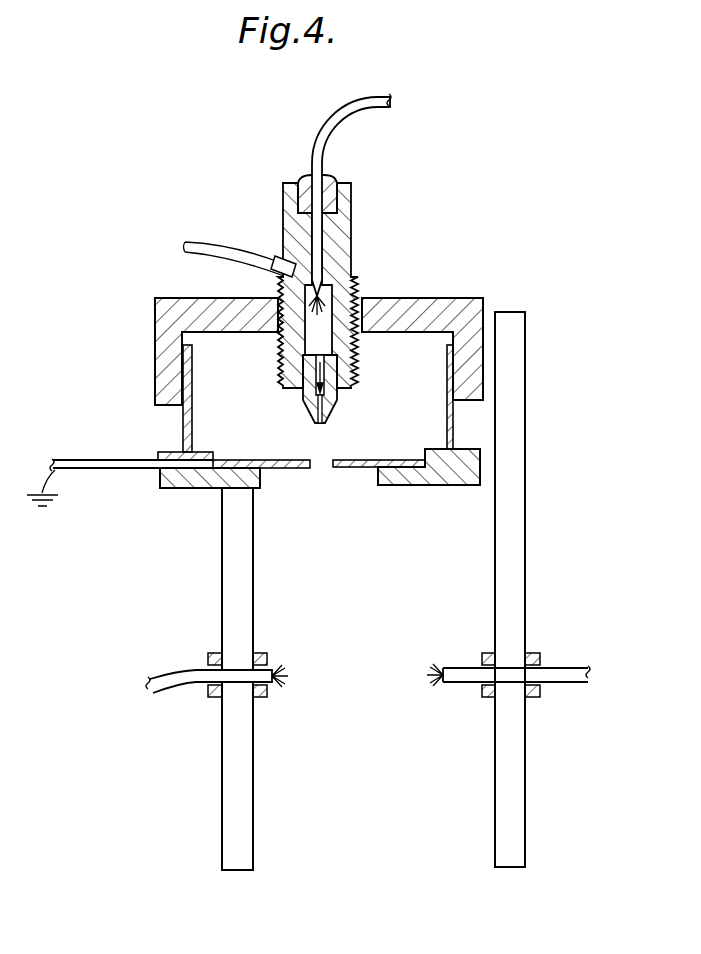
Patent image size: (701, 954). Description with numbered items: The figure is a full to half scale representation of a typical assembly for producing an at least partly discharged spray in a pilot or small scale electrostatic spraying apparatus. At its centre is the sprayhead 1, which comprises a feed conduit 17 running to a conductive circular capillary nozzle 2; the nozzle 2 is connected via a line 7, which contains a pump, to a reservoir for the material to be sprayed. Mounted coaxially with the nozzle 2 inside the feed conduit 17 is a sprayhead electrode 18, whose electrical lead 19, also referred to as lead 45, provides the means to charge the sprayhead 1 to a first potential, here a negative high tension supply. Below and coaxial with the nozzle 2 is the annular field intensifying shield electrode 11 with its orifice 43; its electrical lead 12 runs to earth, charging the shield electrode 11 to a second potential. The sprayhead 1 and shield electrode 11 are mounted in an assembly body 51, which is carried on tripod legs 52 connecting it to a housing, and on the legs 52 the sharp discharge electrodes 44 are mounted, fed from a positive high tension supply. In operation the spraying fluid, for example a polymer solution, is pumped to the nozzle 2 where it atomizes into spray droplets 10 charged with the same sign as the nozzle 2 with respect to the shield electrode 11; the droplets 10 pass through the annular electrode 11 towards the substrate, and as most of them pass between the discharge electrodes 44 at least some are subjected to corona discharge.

The sprayhead 1 is at (352, 240).
The conductive circular capillary nozzle 2 is at (318, 423).
The line 7 is at (200, 243).
The spray droplets 10 is at (320, 602).
The annular field intensifying shield electrode 11 is at (345, 468).
The electrical lead 12 is at (108, 460).
The feed conduit 17 is at (317, 328).
The sprayhead electrode 18 is at (321, 291).
The electrical lead 19 is at (330, 138).
The orifice 43 is at (320, 469).
The discharge electrodes 44 is at (440, 690).
The electrical lead 45 is at (560, 676).
The assembly body 51 is at (478, 462).
The tripod legs 52 is at (525, 337).